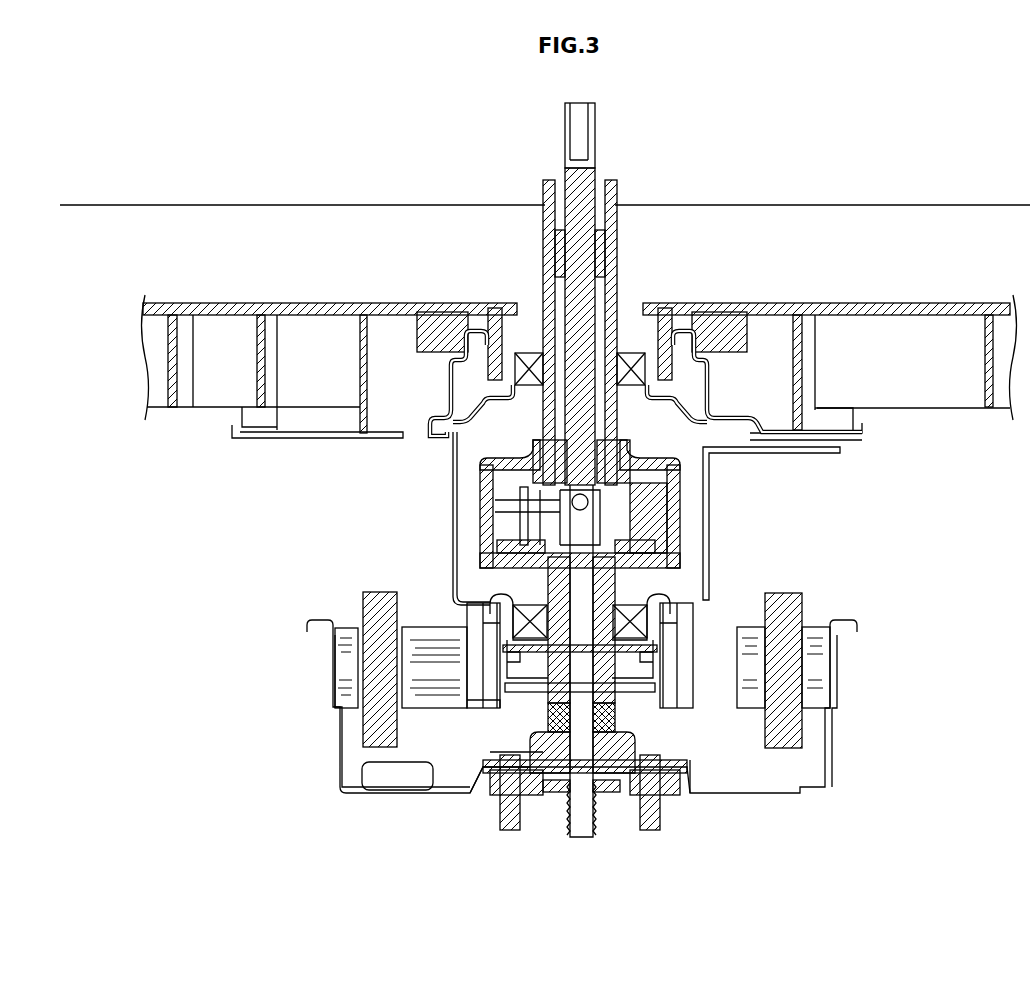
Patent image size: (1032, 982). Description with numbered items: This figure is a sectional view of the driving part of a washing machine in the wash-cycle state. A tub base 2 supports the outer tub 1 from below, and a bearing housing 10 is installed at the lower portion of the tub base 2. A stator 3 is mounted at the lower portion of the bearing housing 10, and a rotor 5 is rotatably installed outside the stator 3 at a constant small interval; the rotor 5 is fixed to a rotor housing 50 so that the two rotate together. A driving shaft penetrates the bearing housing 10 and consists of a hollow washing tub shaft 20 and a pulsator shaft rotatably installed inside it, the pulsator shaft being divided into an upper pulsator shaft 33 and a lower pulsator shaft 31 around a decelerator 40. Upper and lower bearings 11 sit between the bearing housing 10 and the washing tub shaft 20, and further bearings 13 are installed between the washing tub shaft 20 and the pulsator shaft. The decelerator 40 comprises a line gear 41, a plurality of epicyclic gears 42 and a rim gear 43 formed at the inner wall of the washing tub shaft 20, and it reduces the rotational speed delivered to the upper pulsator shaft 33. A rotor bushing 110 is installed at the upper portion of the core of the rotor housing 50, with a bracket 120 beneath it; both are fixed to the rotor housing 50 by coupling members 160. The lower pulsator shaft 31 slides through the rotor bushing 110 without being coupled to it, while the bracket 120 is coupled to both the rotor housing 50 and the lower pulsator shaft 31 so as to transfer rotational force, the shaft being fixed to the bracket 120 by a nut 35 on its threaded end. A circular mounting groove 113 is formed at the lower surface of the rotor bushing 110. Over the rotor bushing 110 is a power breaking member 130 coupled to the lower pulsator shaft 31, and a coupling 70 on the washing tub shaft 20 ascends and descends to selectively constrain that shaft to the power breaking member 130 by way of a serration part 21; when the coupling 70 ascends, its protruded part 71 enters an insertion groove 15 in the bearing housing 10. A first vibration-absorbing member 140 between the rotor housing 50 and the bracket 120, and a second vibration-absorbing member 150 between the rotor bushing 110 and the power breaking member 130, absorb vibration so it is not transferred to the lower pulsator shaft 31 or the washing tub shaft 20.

The outer tub 1 is at (358, 303).
The tub base 2 is at (290, 438).
The stator 3 is at (364, 605).
The rotor 5 is at (338, 668).
The bearing housing 10 is at (708, 520).
The bearings 11 is at (634, 340).
The bearing 13 is at (557, 248).
The insertion groove 15 is at (505, 655).
The washing tub shaft 20 is at (614, 235).
The serration part 21 is at (655, 660).
The lower pulsator shaft 31 is at (581, 840).
The upper pulsator shaft 33 is at (582, 190).
The nut 35 is at (557, 810).
The decelerator 40 is at (396, 462).
The line gear 41 is at (522, 490).
The epicyclic gears 42 is at (560, 504).
The rim gear 43 is at (545, 530).
The rotor housing 50 is at (343, 753).
The coupling 70 is at (640, 687).
The protruded part 71 is at (513, 658).
The rotor bushing 110 is at (638, 748).
The circular mounting groove 113 is at (660, 820).
The bracket 120 is at (605, 790).
The power breaking member 130 is at (618, 718).
The first vibration-absorbing member 140 is at (490, 810).
The second vibration-absorbing member 150 is at (548, 722).
The coupling members 160 is at (492, 775).